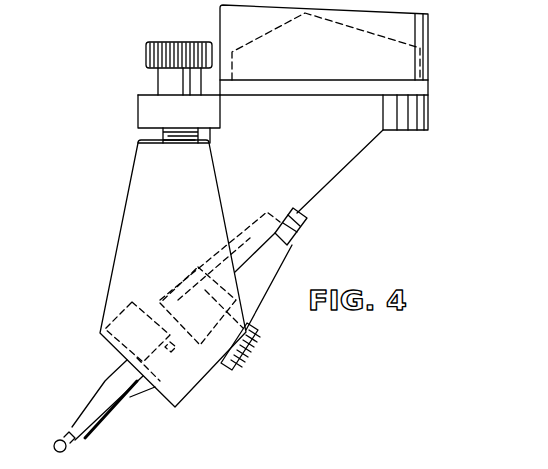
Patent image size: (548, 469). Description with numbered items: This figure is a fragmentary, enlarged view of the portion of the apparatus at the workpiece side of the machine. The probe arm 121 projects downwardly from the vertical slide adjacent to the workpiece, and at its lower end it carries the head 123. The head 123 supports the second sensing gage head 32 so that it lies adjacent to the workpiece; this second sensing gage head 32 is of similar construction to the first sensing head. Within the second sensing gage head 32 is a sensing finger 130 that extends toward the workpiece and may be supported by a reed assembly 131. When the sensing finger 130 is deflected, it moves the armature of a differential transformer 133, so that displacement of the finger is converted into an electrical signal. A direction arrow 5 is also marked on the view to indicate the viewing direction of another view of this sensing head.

The probe arm 121 is at (230, 32).
The head 123 is at (350, 166).
The differential transformer 133 is at (289, 257).
The reed assembly 131 is at (192, 388).
The sensing finger 130 is at (58, 437).
The second sensing gage head 32 is at (98, 332).
The viewing direction arrow 5 is at (258, 365).